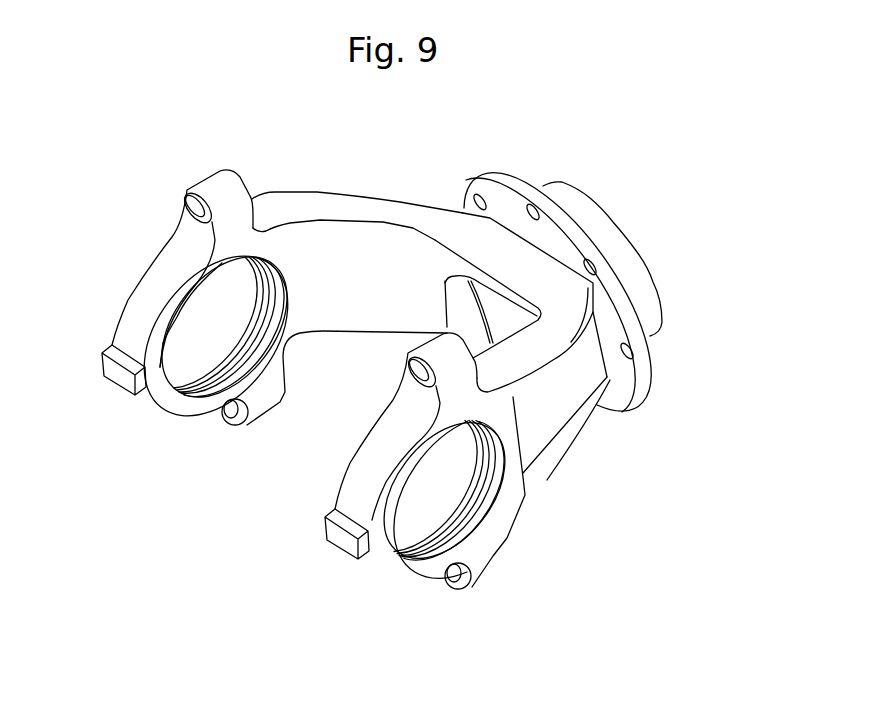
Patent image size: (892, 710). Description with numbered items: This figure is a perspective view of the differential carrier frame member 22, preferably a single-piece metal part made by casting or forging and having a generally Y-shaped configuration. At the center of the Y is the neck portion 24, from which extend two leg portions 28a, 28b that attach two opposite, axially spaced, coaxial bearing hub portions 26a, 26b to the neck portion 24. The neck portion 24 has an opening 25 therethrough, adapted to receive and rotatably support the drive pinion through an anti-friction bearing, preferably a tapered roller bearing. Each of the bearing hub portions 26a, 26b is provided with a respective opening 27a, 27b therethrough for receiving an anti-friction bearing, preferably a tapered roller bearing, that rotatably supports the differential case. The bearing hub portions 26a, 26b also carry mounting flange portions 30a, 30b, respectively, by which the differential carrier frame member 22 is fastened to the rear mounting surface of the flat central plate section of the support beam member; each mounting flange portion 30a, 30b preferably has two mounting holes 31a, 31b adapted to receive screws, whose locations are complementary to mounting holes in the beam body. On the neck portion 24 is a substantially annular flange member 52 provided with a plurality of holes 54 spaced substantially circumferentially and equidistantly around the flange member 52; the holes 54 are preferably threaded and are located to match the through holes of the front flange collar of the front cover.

The differential carrier frame member 22 is at (399, 158).
The neck portion 24 is at (662, 333).
The opening 25 is at (482, 305).
The bearing hub portion 26a is at (393, 590).
The bearing hub portion 26b is at (166, 425).
The opening 27a is at (358, 545).
The opening 27b is at (258, 353).
The leg portion 28a is at (550, 413).
The leg portion 28b is at (297, 190).
The mounting flange portion 30a is at (495, 580).
The mounting flange portion 30b is at (210, 181).
The mounting hole 31a is at (418, 366).
The mounting hole 31b is at (195, 207).
The annular flange member 52 is at (524, 175).
The hole 54 is at (630, 353).